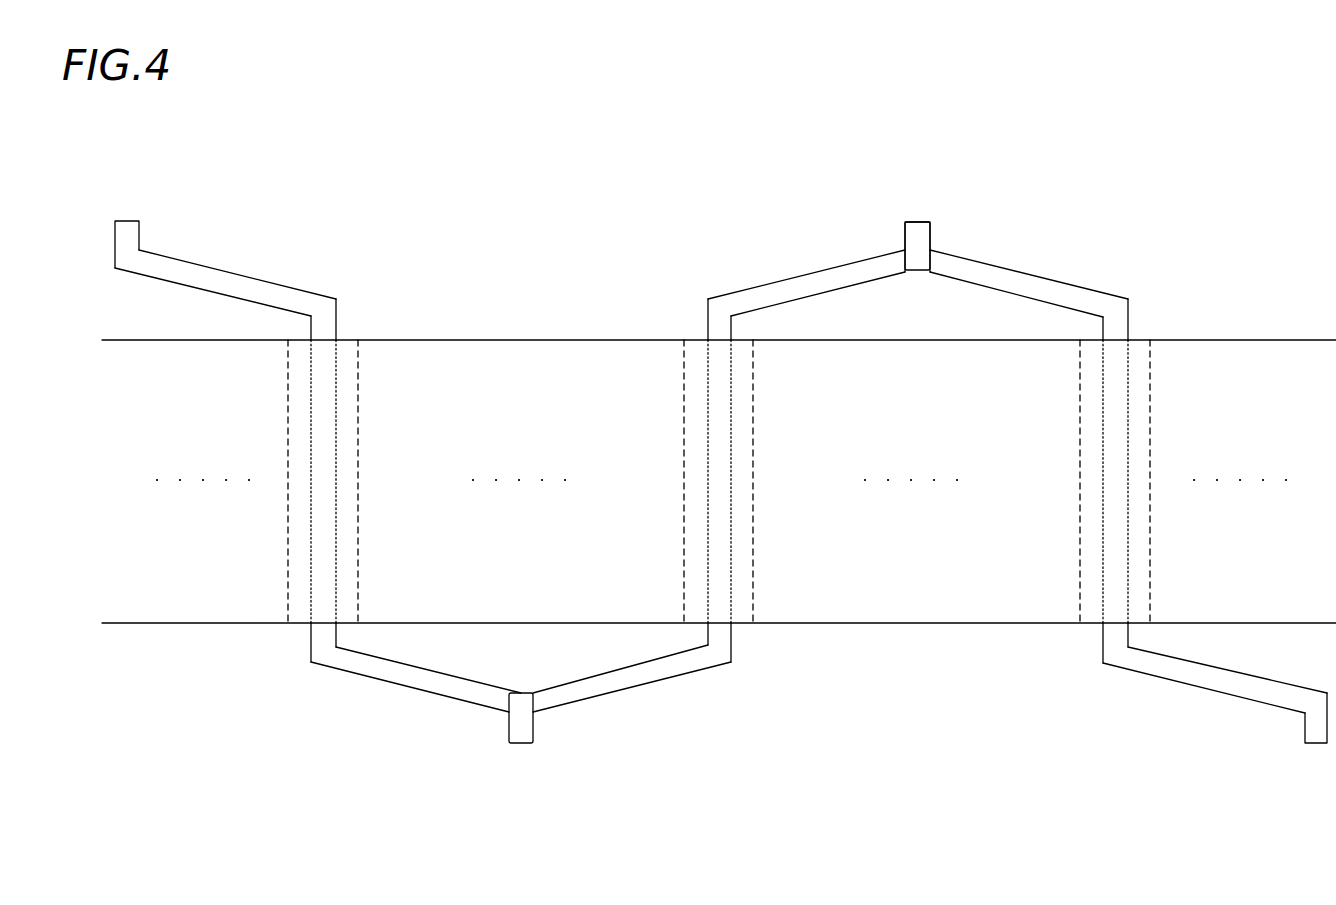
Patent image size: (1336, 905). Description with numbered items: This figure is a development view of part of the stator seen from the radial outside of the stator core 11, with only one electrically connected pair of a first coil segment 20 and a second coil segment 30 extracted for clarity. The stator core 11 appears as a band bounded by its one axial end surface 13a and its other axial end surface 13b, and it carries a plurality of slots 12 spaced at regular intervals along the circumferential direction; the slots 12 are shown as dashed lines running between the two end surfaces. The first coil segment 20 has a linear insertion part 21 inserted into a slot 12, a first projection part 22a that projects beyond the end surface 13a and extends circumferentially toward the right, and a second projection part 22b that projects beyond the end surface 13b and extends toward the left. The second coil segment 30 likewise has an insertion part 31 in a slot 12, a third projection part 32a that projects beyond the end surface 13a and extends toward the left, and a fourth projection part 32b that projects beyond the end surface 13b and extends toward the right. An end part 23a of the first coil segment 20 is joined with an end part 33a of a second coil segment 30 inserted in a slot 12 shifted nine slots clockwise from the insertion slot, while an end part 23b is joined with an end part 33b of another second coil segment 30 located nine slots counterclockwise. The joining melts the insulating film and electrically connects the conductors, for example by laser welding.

The stator core 11 is at (719, 480).
The slot 12 is at (350, 382).
The end surface 13a is at (900, 623).
The end surface 13b is at (555, 340).
The first coil segment 20 is at (721, 493).
The insertion part 21 is at (320, 587).
The first projection part 22a is at (412, 690).
The second projection part 22b is at (208, 274).
The end part 23a is at (518, 744).
The end part 23b is at (127, 221).
The second coil segment 30 is at (719, 457).
The insertion part 31 is at (715, 572).
The third projection part 32a is at (683, 677).
The fourth projection part 32b is at (800, 275).
The end part 33a is at (527, 717).
The end part 33b is at (918, 242).